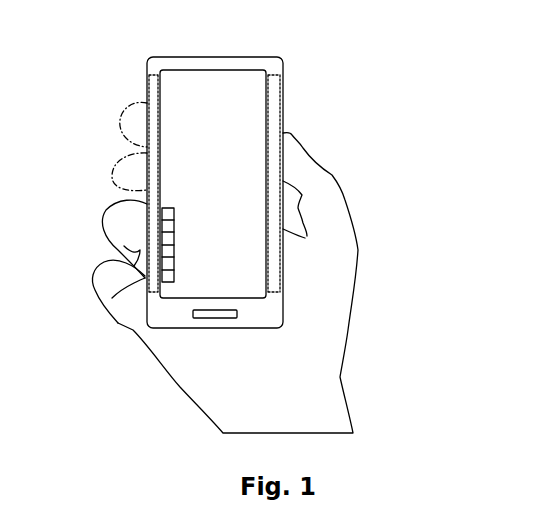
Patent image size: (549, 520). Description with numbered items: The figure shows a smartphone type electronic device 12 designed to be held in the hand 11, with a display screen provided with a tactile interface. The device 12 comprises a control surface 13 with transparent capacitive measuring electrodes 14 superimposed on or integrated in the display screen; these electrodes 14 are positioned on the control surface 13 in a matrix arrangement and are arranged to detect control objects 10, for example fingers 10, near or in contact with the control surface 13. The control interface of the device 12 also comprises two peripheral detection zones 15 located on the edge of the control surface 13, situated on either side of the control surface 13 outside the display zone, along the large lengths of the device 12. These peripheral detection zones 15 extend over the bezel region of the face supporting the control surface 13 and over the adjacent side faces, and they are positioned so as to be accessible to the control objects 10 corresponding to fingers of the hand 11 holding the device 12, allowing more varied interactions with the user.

The control object 10 is at (291, 152).
The hand 11 is at (345, 346).
The electronic device 12 is at (213, 57).
The control surface 13 is at (182, 88).
The transparent capacitive measuring electrodes 14 is at (163, 278).
The peripheral detection zones 15 is at (273, 103).